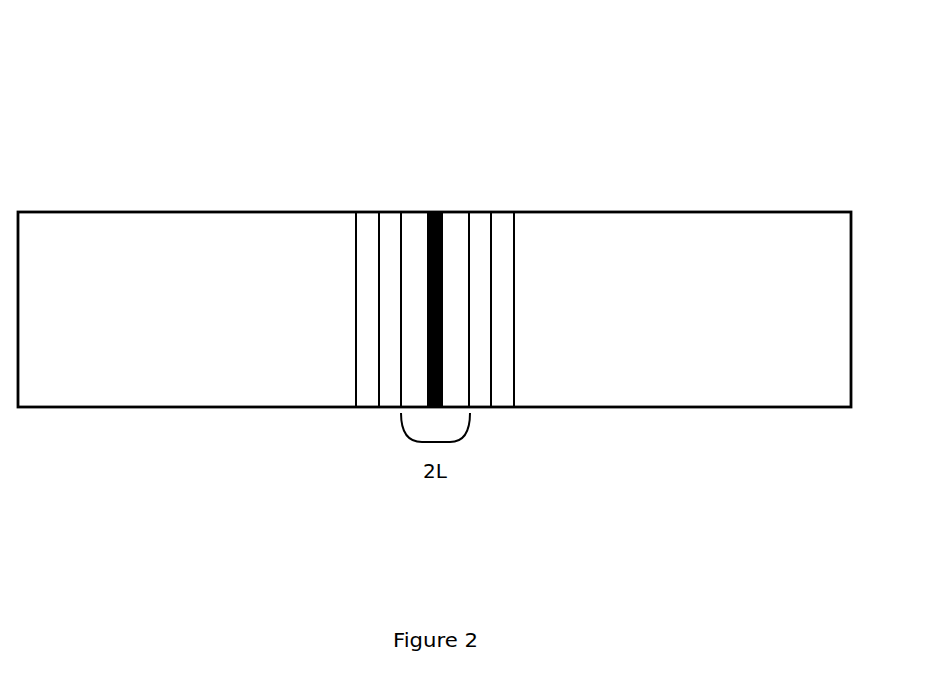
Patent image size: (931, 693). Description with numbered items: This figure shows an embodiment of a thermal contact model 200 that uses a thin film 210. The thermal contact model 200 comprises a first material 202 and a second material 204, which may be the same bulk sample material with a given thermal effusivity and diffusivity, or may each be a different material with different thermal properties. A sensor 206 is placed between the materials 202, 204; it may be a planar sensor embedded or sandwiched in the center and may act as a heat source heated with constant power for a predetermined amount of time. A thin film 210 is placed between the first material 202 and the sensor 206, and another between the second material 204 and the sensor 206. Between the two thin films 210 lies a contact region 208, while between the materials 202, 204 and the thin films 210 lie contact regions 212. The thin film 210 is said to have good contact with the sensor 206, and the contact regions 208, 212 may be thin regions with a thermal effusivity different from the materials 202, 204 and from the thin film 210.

The thermal contact model 200 is at (434, 273).
The first material 202 is at (102, 235).
The second material 204 is at (740, 223).
The sensor 206 is at (436, 206).
The contact region 208 is at (412, 222).
The thin film 210 is at (390, 399).
The contact regions 212 is at (363, 388).